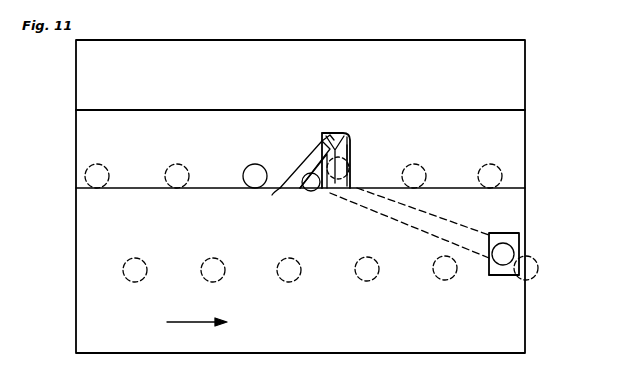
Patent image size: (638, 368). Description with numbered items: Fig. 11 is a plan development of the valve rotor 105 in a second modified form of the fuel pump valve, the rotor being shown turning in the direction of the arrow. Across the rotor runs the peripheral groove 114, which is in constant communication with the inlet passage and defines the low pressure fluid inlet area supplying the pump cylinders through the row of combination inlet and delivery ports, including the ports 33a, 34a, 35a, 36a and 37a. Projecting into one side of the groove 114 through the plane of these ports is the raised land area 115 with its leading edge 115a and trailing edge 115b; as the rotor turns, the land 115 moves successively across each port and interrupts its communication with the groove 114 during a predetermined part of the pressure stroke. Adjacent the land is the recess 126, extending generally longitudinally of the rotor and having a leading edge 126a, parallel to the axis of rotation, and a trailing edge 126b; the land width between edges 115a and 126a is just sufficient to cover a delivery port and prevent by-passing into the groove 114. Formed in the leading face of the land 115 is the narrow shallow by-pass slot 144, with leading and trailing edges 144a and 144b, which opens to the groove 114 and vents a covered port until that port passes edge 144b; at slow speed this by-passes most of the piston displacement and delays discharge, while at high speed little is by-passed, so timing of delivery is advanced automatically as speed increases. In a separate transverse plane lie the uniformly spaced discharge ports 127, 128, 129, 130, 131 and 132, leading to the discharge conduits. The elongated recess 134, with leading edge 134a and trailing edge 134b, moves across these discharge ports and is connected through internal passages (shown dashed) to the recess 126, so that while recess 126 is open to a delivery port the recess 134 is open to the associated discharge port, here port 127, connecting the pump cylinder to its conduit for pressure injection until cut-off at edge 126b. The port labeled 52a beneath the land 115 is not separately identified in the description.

The valve rotor 105 is at (525, 90).
The peripheral groove 114 is at (437, 118).
The inlet port 35a is at (108, 171).
The inlet port 36a is at (183, 167).
The inlet port 37a is at (245, 173).
The inlet port 33a is at (422, 172).
The inlet port 34a is at (489, 166).
The discharge port 128 is at (158, 260).
The discharge port 129 is at (232, 260).
The discharge port 130 is at (298, 280).
The discharge port 131 is at (360, 282).
The discharge port 132 is at (440, 281).
The elongated recess 134 is at (503, 233).
The leading edge of recess 134 134a is at (515, 250).
The trailing edge of recess 134 134b is at (495, 275).
The discharge port 127 is at (531, 279).
The by-pass slot 144 is at (350, 140).
The leading edge of by-pass slot 144a is at (350, 158).
The trailing edge of by-pass slot 144b is at (340, 130).
The raised land area 115 is at (322, 133).
The leading edge of land area 115a is at (350, 178).
The trailing edge of land area 115b is at (310, 166).
The recess 126 is at (313, 156).
The leading edge of recess 126 126a is at (320, 139).
The trailing edge of recess 126 126b is at (284, 180).
The pivot pin 52a is at (312, 192).